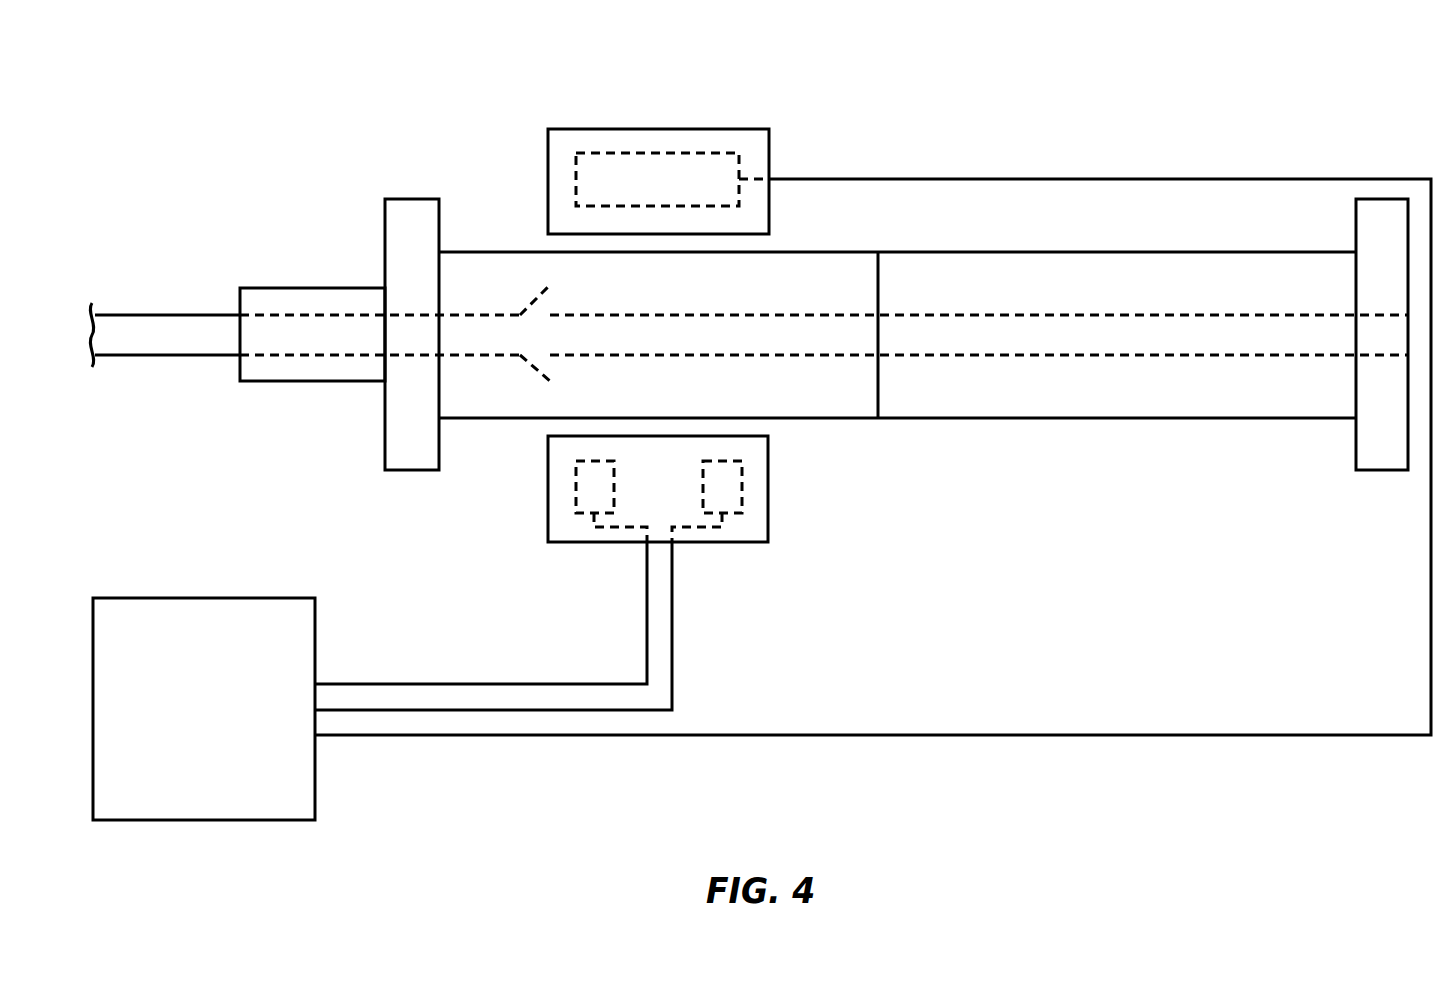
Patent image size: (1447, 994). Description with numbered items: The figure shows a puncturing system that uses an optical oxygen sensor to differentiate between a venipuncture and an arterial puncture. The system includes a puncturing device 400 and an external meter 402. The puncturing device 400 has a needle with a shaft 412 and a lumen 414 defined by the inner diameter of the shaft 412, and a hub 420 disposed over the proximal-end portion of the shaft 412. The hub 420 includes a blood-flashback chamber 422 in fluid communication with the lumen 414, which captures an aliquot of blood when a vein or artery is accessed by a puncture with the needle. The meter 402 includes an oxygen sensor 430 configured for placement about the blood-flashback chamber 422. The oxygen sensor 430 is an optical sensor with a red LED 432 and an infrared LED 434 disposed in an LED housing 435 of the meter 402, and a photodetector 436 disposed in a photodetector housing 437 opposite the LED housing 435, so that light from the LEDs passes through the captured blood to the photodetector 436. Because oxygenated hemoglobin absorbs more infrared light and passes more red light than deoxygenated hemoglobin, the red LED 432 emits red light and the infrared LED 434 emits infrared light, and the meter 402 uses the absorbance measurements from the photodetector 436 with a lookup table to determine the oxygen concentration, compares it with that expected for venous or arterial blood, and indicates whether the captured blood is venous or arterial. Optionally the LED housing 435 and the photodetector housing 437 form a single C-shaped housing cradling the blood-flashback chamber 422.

The puncturing device 400 is at (298, 140).
The external meter 402 is at (232, 842).
The shaft 412 is at (135, 320).
The lumen 414 is at (230, 333).
The hub 420 is at (1102, 453).
The blood-flashback chamber 422 is at (827, 297).
The oxygen sensor 430 is at (653, 351).
The red LED 432 is at (576, 498).
The infrared LED 434 is at (742, 487).
The LED housing 435 is at (565, 542).
The photodetector 436 is at (738, 167).
The photodetector housing 437 is at (593, 129).